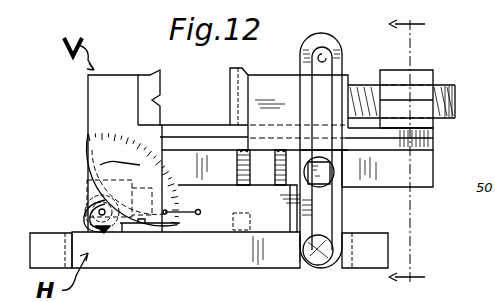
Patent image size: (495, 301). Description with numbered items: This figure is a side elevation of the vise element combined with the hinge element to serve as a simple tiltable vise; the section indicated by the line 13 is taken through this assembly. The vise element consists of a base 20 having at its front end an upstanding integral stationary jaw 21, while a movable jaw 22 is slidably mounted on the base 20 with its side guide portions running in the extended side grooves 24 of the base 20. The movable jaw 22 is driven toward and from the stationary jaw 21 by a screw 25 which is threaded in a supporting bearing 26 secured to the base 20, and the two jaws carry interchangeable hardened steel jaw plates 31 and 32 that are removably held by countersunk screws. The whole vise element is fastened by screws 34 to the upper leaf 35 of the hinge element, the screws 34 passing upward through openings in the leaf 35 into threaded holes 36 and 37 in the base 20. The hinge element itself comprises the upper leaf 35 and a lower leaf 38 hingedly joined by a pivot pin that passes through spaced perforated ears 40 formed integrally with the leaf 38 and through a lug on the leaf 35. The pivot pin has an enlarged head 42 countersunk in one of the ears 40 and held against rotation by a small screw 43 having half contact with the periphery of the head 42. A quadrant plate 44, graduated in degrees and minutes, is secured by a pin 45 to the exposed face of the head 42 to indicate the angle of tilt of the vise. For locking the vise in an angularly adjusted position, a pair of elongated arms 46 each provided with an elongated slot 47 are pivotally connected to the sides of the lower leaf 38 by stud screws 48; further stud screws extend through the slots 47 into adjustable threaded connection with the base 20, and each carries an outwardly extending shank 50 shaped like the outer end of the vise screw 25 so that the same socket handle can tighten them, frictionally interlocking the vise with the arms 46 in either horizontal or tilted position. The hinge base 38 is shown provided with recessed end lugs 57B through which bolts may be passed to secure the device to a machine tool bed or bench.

The section line 13- 13 is at (417, 154).
The base 20 is at (423, 168).
The stationary jaw 21 is at (90, 86).
The movable jaw 22 is at (274, 84).
The side grooves 24 is at (423, 146).
The screw 25 is at (443, 90).
The supporting bearing 26 is at (420, 75).
The jaw plate 31 is at (147, 70).
The jaw plate 32 is at (231, 72).
The screws 34 is at (228, 163).
The upper leaf 35 is at (262, 218).
The threaded hole 36 is at (98, 155).
The threaded hole 37 is at (206, 137).
The lower leaf 38 is at (220, 255).
The perforated ears 40 is at (85, 220).
The enlarged head 42 is at (96, 194).
The small screw 43 is at (98, 230).
The quadrant plate 44 is at (110, 164).
The pin 45 is at (99, 211).
The elongated arms 46 is at (340, 38).
The elongated slot 47 is at (328, 58).
The stud screws 48 is at (330, 252).
The shank 50 is at (320, 182).
The open-slotted lugs 57B is at (375, 268).